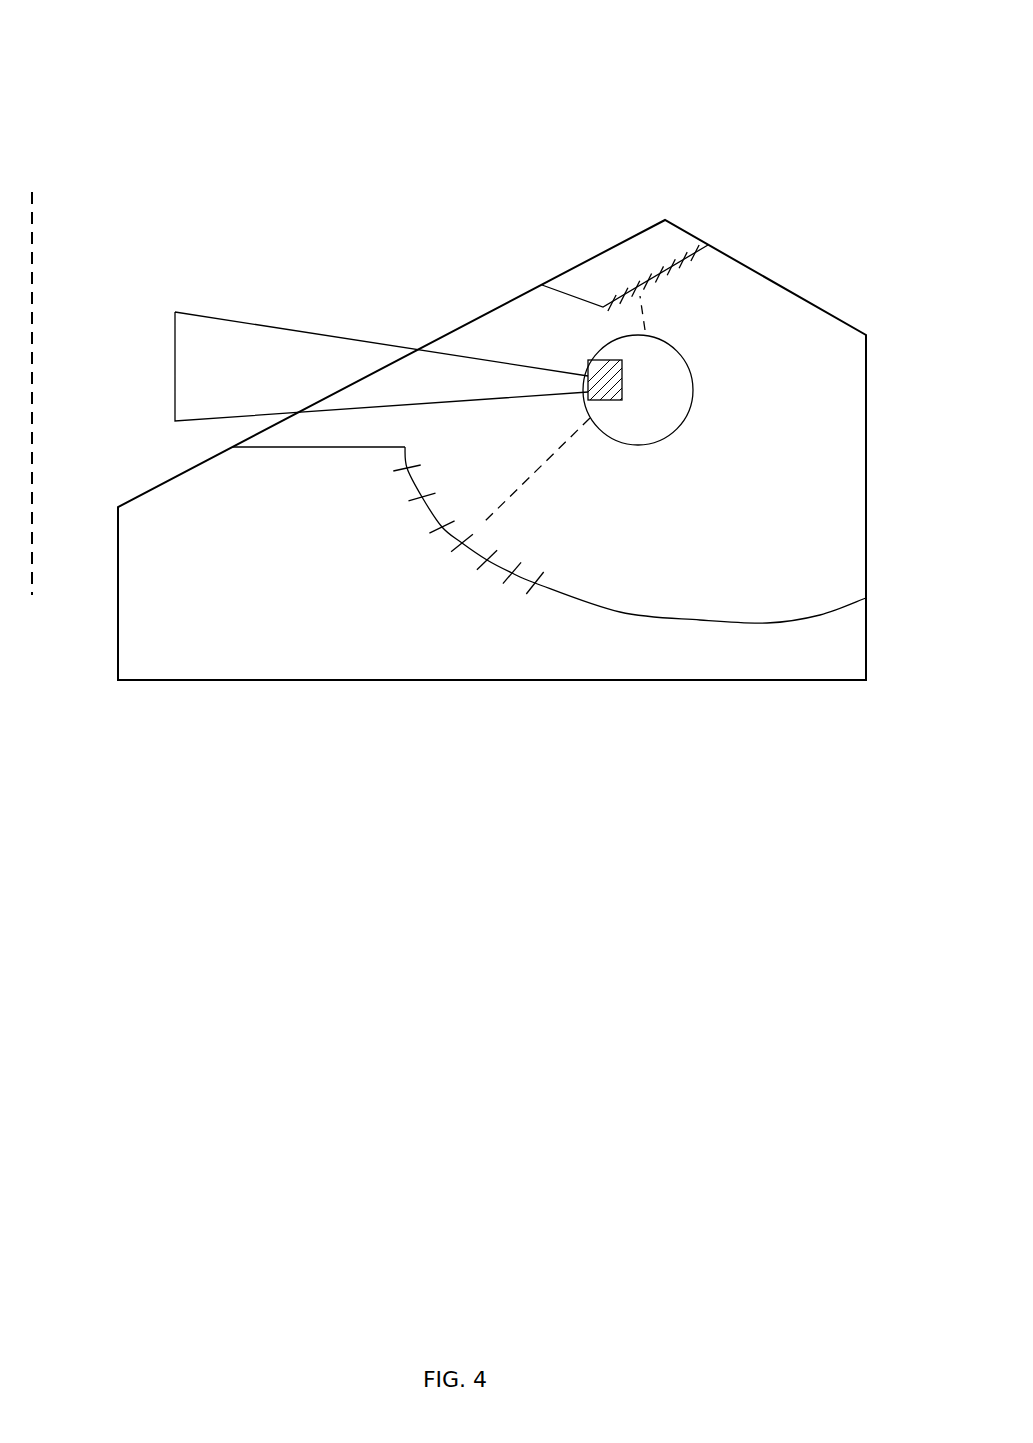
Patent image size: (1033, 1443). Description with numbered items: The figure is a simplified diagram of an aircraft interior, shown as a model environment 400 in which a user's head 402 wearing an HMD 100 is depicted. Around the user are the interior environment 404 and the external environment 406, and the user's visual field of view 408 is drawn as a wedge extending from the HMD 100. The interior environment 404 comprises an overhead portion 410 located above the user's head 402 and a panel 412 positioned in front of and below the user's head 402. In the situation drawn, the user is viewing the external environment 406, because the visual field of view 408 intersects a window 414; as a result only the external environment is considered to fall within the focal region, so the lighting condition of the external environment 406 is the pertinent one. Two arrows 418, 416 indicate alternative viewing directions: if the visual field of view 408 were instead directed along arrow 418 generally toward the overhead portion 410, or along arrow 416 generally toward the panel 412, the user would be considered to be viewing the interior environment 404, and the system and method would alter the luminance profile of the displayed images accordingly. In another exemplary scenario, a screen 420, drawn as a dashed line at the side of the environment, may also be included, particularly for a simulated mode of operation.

The illumination system 400 is at (756, 88).
The HMD 100 is at (588, 366).
The user's head 402 is at (693, 382).
The interior environment 404 is at (845, 474).
The external environment 406 is at (381, 334).
The visual field of view 408 is at (265, 325).
The overhead portion 410 is at (690, 248).
The panel 412 is at (549, 565).
The window 414 is at (245, 433).
The arrow 416 is at (535, 472).
The arrow 418 is at (670, 310).
The screen 420 is at (40, 233).